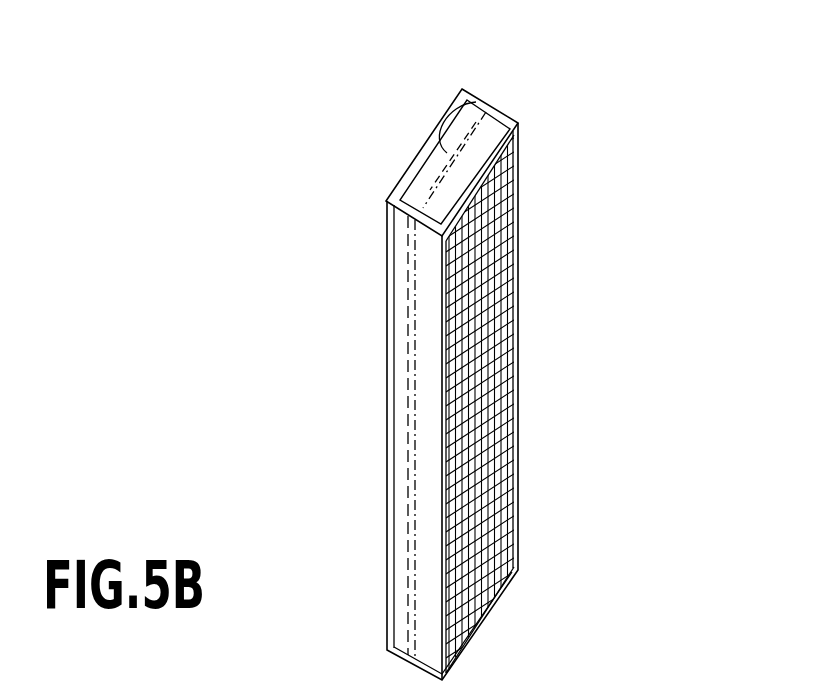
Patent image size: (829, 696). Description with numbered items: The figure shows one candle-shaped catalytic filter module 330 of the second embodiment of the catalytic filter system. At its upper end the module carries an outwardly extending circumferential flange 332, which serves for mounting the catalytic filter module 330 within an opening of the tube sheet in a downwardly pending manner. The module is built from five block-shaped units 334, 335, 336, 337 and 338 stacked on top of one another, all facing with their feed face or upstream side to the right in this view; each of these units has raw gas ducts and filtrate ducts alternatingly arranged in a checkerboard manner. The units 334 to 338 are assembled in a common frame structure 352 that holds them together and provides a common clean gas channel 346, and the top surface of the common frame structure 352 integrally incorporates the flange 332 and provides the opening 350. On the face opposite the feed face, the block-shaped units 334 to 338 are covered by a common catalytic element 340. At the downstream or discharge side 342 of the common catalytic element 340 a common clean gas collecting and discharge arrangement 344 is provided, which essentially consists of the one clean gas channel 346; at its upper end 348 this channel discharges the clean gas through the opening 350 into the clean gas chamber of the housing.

The catalytic filter module 330 is at (566, 401).
The circumferential flange 332 is at (519, 121).
The unit 334 is at (515, 518).
The unit 335 is at (511, 430).
The unit 336 is at (511, 358).
The unit 337 is at (514, 254).
The unit 338 is at (514, 181).
The common catalytic element 340 is at (412, 285).
The discharge side 342 is at (471, 98).
The clean gas collecting and discharge arrangement 344 is at (355, 465).
The clean gas channel 346 is at (407, 523).
The upper end 348 is at (386, 160).
The opening 350 is at (446, 117).
The common frame structure 352 is at (490, 612).